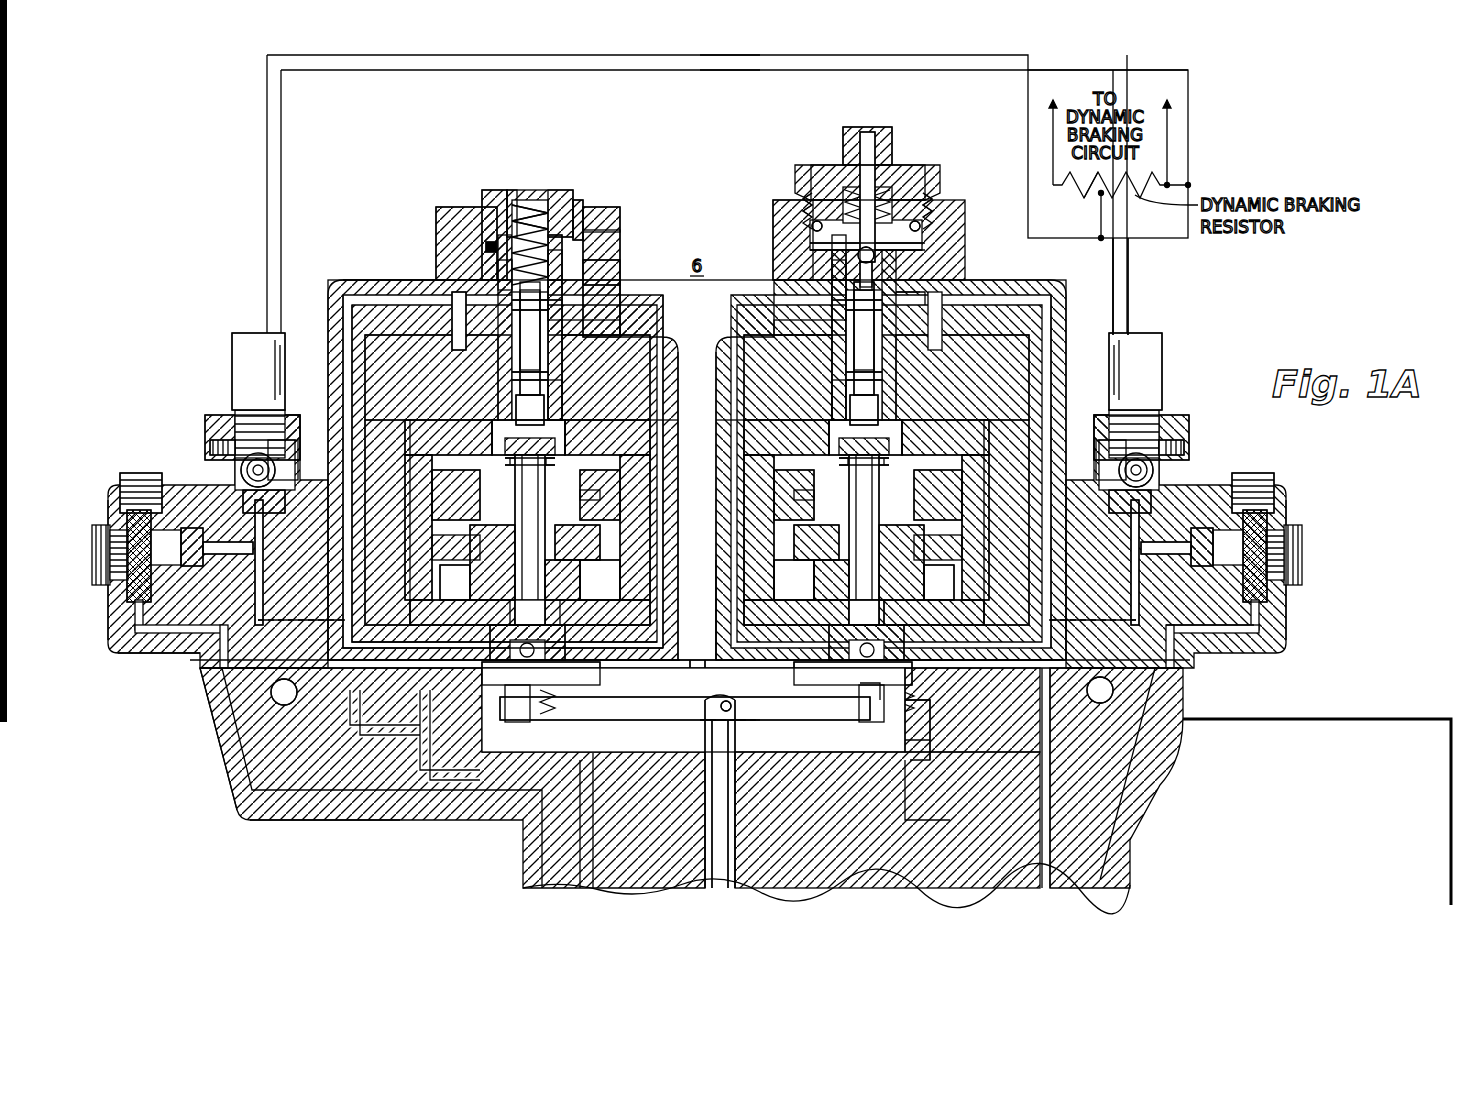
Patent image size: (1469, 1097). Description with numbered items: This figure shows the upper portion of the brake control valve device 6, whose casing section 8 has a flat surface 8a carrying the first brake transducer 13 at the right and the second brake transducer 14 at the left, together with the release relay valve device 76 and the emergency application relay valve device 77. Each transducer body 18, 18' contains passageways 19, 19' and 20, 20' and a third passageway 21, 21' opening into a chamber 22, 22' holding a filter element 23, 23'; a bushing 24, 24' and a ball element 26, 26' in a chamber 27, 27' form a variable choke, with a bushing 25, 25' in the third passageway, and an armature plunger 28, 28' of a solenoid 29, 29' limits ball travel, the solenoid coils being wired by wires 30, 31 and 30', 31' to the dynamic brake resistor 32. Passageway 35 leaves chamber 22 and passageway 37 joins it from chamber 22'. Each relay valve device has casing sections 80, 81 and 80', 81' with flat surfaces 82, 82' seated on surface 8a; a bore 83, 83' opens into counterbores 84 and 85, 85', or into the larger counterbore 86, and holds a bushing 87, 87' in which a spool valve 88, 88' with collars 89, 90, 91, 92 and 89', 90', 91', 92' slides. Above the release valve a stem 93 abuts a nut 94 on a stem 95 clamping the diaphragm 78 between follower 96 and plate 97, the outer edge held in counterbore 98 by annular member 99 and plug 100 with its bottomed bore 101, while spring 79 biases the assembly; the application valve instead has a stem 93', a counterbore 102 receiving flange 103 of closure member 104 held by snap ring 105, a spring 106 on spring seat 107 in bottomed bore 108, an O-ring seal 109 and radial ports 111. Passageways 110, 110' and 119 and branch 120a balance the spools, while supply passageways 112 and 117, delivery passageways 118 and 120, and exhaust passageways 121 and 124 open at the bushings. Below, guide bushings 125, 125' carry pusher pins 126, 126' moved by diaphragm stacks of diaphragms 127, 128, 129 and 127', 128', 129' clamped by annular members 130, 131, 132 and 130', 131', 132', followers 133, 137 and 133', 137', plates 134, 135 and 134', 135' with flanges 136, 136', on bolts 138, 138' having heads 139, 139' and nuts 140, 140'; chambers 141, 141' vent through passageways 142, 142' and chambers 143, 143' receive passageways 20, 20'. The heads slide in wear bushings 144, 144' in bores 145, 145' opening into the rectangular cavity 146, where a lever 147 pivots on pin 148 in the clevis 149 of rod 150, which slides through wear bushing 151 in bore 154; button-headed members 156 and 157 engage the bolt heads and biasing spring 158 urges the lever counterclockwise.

The brake control valve device 6 is at (697, 470).
The casing section 8 is at (228, 775).
The flat surface 8a is at (268, 670).
The first brake transducer 13 is at (1186, 425).
The second brake transducer 14 is at (210, 425).
The body 18 is at (1251, 592).
The body 18' is at (143, 589).
The passageway 19 is at (1092, 610).
The passageway 19' is at (301, 610).
The passageway 20 is at (1111, 576).
The passageway 20' is at (315, 574).
The third passageway 21 is at (1166, 544).
The third passageway 21' is at (228, 544).
The chamber 22 is at (1273, 496).
The chamber 22' is at (153, 496).
The filter element 23 is at (1240, 556).
The filter element 23' is at (156, 556).
The bushing 24 is at (1145, 501).
The bushing 24' is at (248, 501).
The bushing 25 is at (1210, 564).
The bushing 25' is at (181, 564).
The ball element 26 is at (1168, 470).
The ball element 26' is at (222, 470).
The chamber 27 is at (1101, 436).
The chamber 27' is at (292, 436).
The armature plunger 28 is at (1189, 448).
The armature plunger 28' is at (209, 448).
The solenoid 29 is at (1159, 365).
The solenoid 29' is at (235, 365).
The wire 30 is at (1098, 286).
The wire 30' is at (630, 175).
The wire 31 is at (1143, 286).
The wire 31' is at (751, 192).
The dynamic brake resistor 32 is at (1085, 196).
The passageway 35 is at (1258, 612).
The passageway 37 is at (142, 650).
The release relay valve device 76 is at (772, 222).
The emergency application relay valve device 77 is at (434, 222).
The diaphragm 78 is at (925, 250).
The spring 79 is at (805, 192).
The casing section 80 is at (697, 506).
The casing section 80' is at (386, 273).
The casing section 81 is at (697, 610).
The casing section 81' is at (686, 506).
The flat surface 82 is at (982, 679).
The flat surface 82' is at (640, 679).
The bore 83 is at (795, 307).
The bore 83' is at (600, 308).
The counterbore 84 is at (830, 282).
The counterbore 85 is at (722, 433).
The counterbore 85' is at (675, 420).
The counterbore 86 is at (610, 277).
The bushing 87 is at (812, 327).
The bushing 87' is at (583, 327).
The spool-type valve 88 is at (895, 338).
The spool-type valve 88' is at (502, 338).
The collar 89 is at (795, 289).
The collar 89' is at (600, 290).
The collar 90 is at (865, 330).
The collar 90' is at (526, 330).
The collar 91 is at (830, 346).
The collar 91' is at (507, 341).
The collar 92 is at (891, 382).
The collar 92' is at (562, 382).
The stem 93 is at (895, 271).
The stem 93' is at (481, 274).
The nut 94 is at (852, 257).
The stem 95 is at (878, 170).
The diaphragm follower 96 is at (932, 196).
The diaphragm follower plate 97 is at (835, 246).
The counterbore 98 is at (810, 225).
The annular member 99 is at (918, 232).
The screw-threaded plug 100 is at (830, 168).
The bottomed bore 101 is at (845, 135).
The counterbore 102 is at (590, 208).
The out-turned flange 103 is at (620, 232).
The closure member 104 is at (483, 197).
The snap ring 105 is at (620, 217).
The spring 106 is at (505, 195).
The spring seat 107 is at (535, 195).
The bottomed bore 108 is at (555, 195).
The O-ring seal 109 is at (486, 246).
The passageway 110 is at (783, 322).
The passageway 110' is at (610, 325).
The radial ports 111 is at (560, 267).
The supply passageway 112 is at (662, 376).
The supply passageway 117 is at (395, 740).
The delivery passageway 118 is at (1187, 722).
The passageway 119 is at (922, 304).
The delivery passageway 120 is at (370, 665).
The branch passageway 120a is at (458, 345).
The exhaust passageway 121 is at (428, 765).
The exhaust passageway 124 is at (1052, 372).
The guide bushing 125 is at (886, 400).
The guide bushing 125' is at (584, 400).
The pusher pin 126 is at (821, 407).
The pusher pin 126' is at (496, 406).
The diaphragm 127 is at (900, 465).
The diaphragm 127' is at (562, 465).
The diaphragm 128 is at (850, 542).
The diaphragm 128' is at (573, 542).
The diaphragm 129 is at (940, 612).
The diaphragm 129' is at (605, 612).
The annular member 130 is at (960, 437).
The annular member 130' is at (431, 437).
The annular member 131 is at (991, 527).
The annular member 131' is at (404, 527).
The annular member 132 is at (881, 527).
The annular member 132' is at (669, 527).
The diaphragm follower 133 is at (840, 437).
The diaphragm follower 133' is at (503, 437).
The diaphragm follower plate 134 is at (858, 495).
The diaphragm follower plate 134' is at (455, 495).
The diaphragm follower plate 135 is at (862, 580).
The diaphragm follower plate 135' is at (599, 580).
The out-turned flange 136 is at (861, 582).
The out-turned flange 136' is at (457, 582).
The diaphragm follower 137 is at (809, 622).
The diaphragm follower 137' is at (454, 615).
The bolt 138 is at (846, 540).
The bolt 138' is at (513, 540).
The cylindrical head 139 is at (829, 580).
The cylindrical head 139' is at (560, 580).
The nut 140 is at (847, 437).
The nut 140' is at (607, 437).
The chamber 141 is at (877, 490).
The chamber 141' is at (599, 490).
The passageway 142 is at (840, 495).
The passageway 142' is at (580, 495).
The chamber 143 is at (831, 573).
The chamber 143' is at (492, 562).
The wear bushing 144 is at (910, 642).
The wear bushing 144' is at (577, 642).
The bore 145 is at (853, 680).
The bore 145' is at (543, 680).
The rectangular cavity 146 is at (705, 685).
The lever 147 is at (662, 712).
The pin 148 is at (718, 715).
The clevis 149 is at (742, 718).
The rod 150 is at (735, 850).
The wear bushing 151 is at (705, 775).
The bore 154 is at (740, 777).
The button-headed member 156 is at (528, 695).
The button-headed member 157 is at (858, 685).
The biasing spring 158 is at (570, 692).